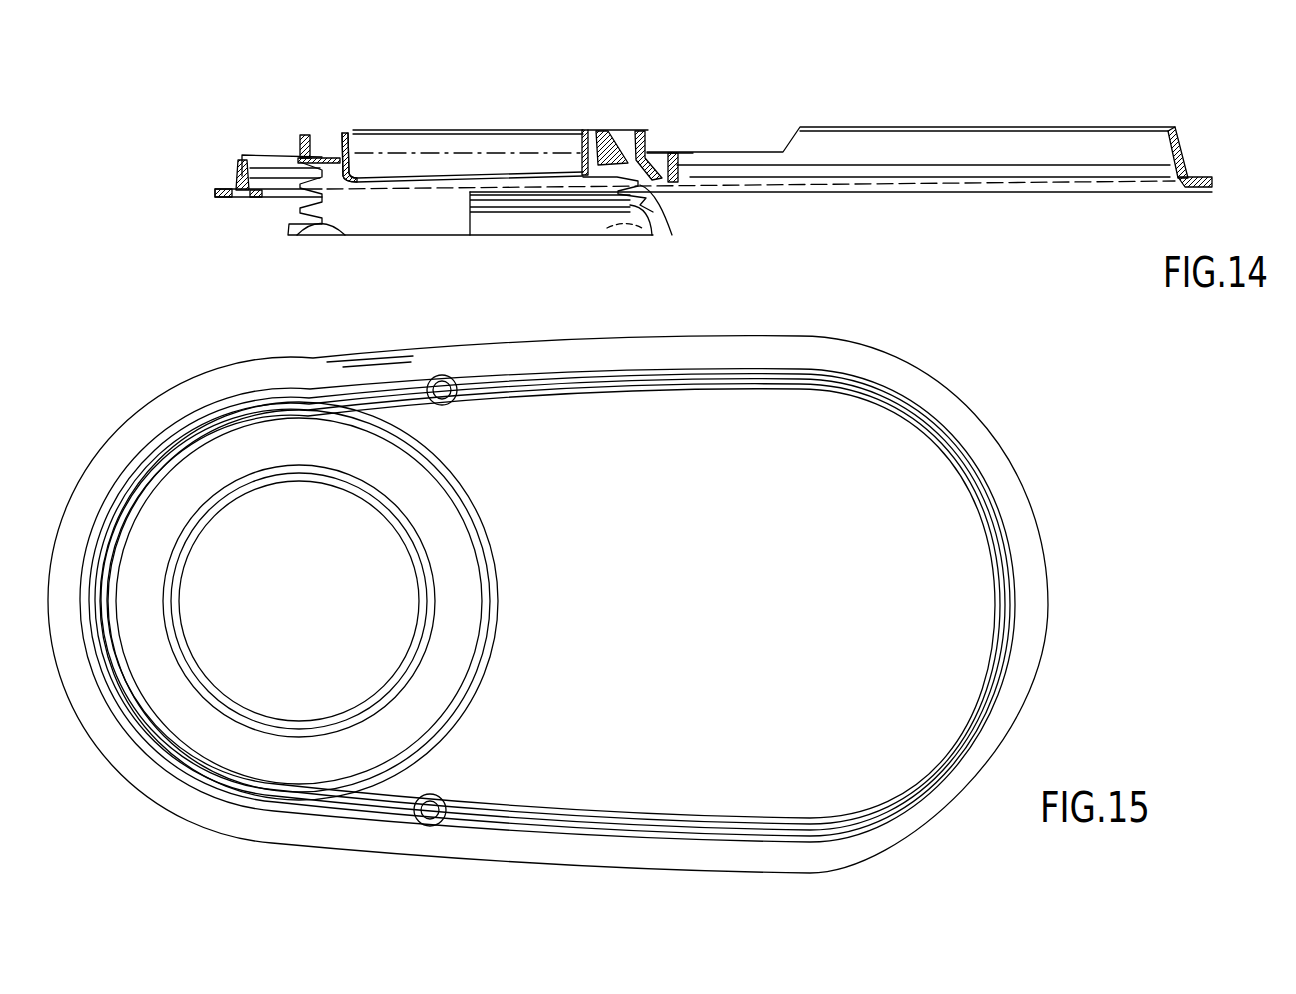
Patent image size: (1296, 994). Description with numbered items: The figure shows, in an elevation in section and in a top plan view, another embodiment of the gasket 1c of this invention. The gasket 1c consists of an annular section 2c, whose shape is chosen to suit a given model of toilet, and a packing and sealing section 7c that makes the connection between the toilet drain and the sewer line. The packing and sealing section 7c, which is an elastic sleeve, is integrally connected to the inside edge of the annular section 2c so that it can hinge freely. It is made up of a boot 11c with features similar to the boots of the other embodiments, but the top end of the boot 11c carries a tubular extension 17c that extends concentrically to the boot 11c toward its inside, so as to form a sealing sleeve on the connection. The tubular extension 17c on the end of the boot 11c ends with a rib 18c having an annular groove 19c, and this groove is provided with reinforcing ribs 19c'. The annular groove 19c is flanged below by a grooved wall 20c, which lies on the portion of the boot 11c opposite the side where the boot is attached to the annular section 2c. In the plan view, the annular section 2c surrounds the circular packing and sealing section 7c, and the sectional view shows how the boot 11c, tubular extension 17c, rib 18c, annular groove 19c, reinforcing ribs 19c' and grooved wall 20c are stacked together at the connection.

In FIG. 14, the gasket 1c is at (853, 111).
In FIG. 15, the gasket 1c is at (851, 318).
In FIG. 15, the annular section 2c is at (703, 346).
In FIG. 14, the packing and sealing section 7c is at (279, 233).
In FIG. 15, the packing and sealing section 7c is at (497, 539).
In FIG. 14, the boot 11c is at (653, 190).
In FIG. 14, the tubular extension 17c is at (360, 155).
In FIG. 14, the rib 18c is at (641, 131).
In FIG. 14, the annular groove 19c is at (372, 104).
In FIG. 14, the reinforcing ribs 19c' is at (651, 108).
In FIG. 14, the grooved wall 20c is at (674, 153).